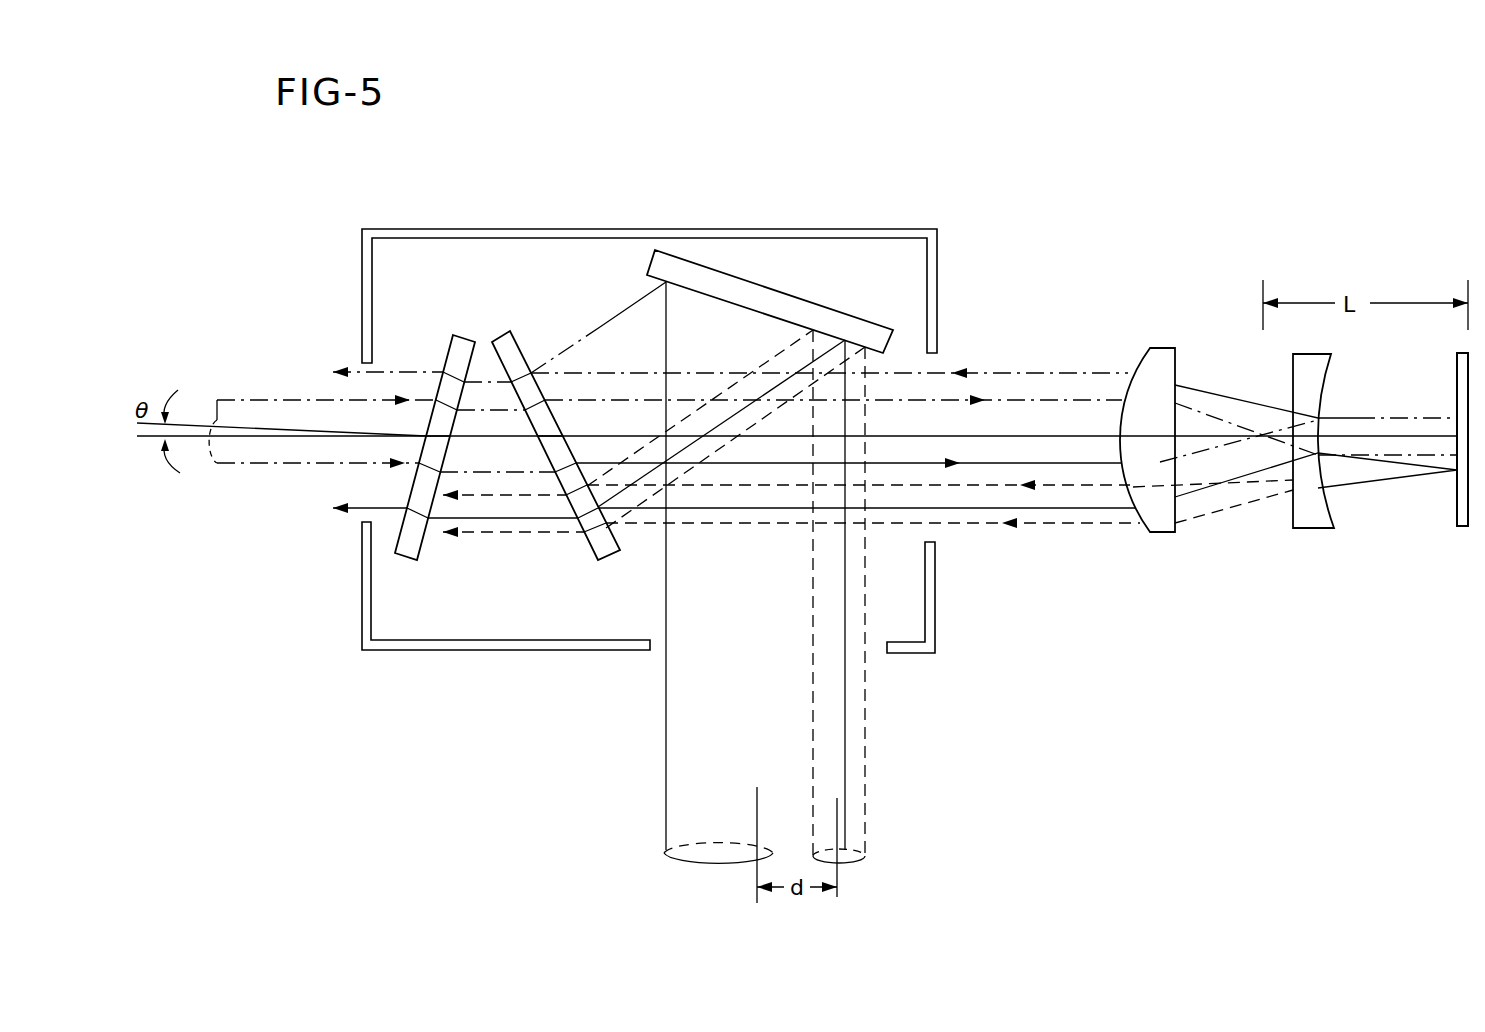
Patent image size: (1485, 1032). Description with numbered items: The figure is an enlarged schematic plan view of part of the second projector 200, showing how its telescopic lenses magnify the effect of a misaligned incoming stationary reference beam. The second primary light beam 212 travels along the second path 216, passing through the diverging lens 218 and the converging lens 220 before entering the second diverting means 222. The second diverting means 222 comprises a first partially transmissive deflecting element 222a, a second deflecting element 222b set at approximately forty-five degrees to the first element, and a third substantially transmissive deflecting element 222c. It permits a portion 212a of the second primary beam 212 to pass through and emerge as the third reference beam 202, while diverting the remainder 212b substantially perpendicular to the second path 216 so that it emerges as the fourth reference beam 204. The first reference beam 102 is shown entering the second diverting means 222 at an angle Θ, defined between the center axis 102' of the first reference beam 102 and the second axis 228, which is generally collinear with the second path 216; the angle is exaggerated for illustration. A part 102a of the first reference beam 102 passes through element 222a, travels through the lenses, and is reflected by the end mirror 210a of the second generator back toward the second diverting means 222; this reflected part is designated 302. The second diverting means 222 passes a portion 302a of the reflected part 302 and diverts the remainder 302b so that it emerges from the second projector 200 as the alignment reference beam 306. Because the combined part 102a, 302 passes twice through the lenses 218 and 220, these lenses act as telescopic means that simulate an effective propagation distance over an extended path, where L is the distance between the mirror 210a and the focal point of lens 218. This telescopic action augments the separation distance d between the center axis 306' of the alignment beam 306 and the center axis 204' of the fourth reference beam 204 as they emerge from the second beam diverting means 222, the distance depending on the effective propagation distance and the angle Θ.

The first reference beam 102 is at (797, 467).
The center axis of the first reference beam 102' is at (281, 388).
The part of the first reference beam 102a is at (1085, 400).
The second projector 200 is at (975, 277).
The third reference beam 202 is at (321, 339).
The fourth reference beam 204 is at (634, 572).
The center axis of the fourth reference beam 204' is at (718, 828).
The end mirror 210a is at (1462, 526).
The second primary light beam 212 is at (980, 372).
The portion of the second primary beam 212a is at (343, 368).
The remainder of the second primary beam 212b is at (663, 783).
The second path 216 is at (1387, 413).
The diverging lens 218 is at (1313, 528).
The converging lens 220 is at (1162, 532).
The second diverting means 222 is at (706, 220).
The first partially transmissive deflecting element 222a is at (505, 340).
The second deflecting element 222b is at (797, 298).
The third substantially transmissive deflecting element 222c is at (462, 343).
The second axis 228 is at (1357, 435).
The reflected part of the first reference beam 302 is at (1075, 487).
The portion of the reflected part 302a is at (535, 532).
The remainder of the reflected part 302b is at (911, 596).
The alignment reference beam 306 is at (911, 596).
The center axis of the alignment beam 306' is at (893, 846).